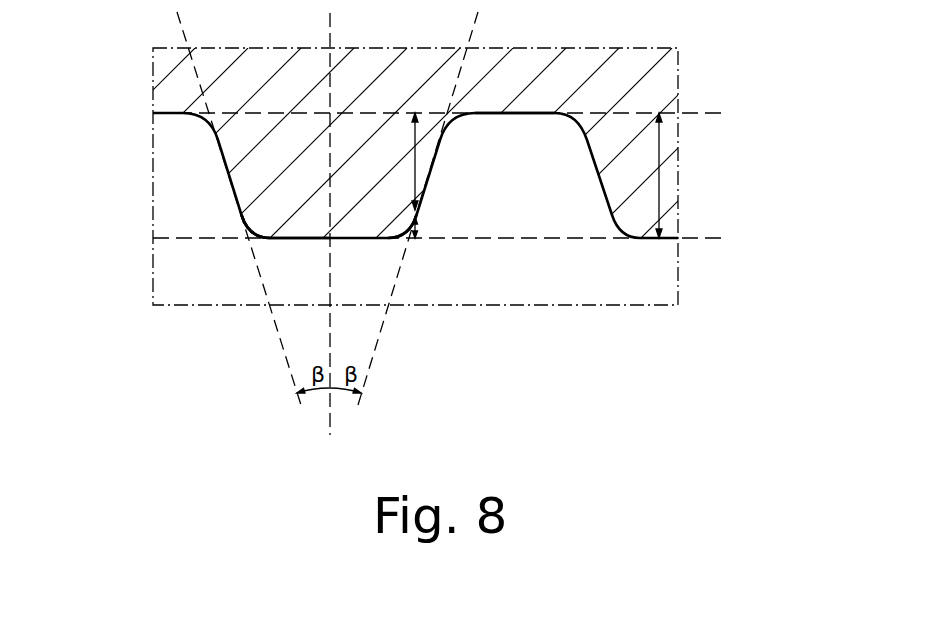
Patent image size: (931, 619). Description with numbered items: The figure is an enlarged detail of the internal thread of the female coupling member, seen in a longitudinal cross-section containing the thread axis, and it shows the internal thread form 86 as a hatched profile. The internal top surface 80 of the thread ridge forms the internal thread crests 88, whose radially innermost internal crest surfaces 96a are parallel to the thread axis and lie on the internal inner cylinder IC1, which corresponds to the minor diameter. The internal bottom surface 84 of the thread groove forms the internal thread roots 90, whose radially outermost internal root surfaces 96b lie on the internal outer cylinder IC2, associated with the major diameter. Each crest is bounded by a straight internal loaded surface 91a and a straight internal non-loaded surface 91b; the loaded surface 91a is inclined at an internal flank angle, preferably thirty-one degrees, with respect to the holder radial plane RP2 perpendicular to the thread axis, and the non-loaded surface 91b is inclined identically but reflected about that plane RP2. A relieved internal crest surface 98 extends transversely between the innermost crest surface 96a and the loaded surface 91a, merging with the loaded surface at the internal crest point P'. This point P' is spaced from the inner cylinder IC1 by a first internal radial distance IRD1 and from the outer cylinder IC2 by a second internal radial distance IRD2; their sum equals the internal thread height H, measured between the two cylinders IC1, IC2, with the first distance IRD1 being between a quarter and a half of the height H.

The internal top surface 80 is at (261, 242).
The internal bottom surface 84 is at (500, 116).
The internal thread form 86 is at (122, 179).
The internal thread crests 88 is at (356, 239).
The internal thread roots 90 is at (521, 115).
The internal loaded surfaces 91a is at (436, 154).
The internal non-loaded surfaces 91b is at (226, 168).
The radially innermost internal crest surface 96a is at (301, 239).
The radially outermost internal root surface 96b is at (550, 115).
The relieved internal crest surface 98 is at (406, 243).
The internal inner cylinder IC1 is at (703, 240).
The internal outer cylinder IC2 is at (705, 113).
The first internal radial distance IRD1 is at (420, 224).
The second internal radial distance IRD2 is at (413, 150).
The internal crest point P' is at (439, 218).
The internal thread height H is at (657, 169).
The holder radial plane RP2 is at (328, 423).